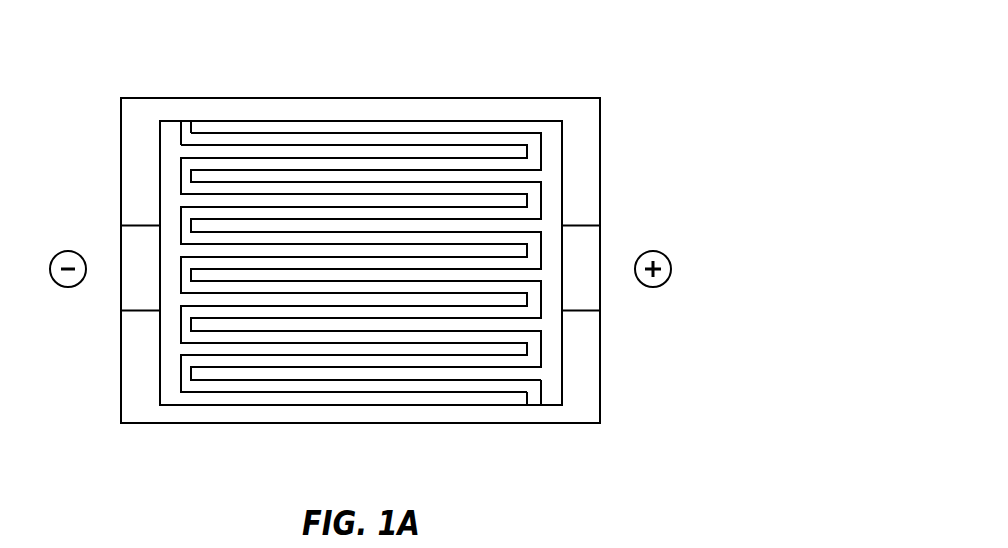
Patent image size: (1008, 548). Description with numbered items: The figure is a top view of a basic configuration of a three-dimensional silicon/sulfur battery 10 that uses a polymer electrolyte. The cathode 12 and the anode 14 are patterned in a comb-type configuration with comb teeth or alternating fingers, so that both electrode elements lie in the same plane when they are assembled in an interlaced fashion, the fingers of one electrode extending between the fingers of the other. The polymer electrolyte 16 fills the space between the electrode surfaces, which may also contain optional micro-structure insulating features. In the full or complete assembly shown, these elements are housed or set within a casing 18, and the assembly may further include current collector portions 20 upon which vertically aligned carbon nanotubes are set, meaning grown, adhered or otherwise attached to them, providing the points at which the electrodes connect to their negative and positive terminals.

The 3D Si/S battery 10 is at (502, 56).
The cathode 12 is at (556, 365).
The anode 14 is at (160, 369).
The polymer electrolyte 16 is at (512, 357).
The casing 18 is at (577, 405).
The current collector portions 20 is at (133, 248).